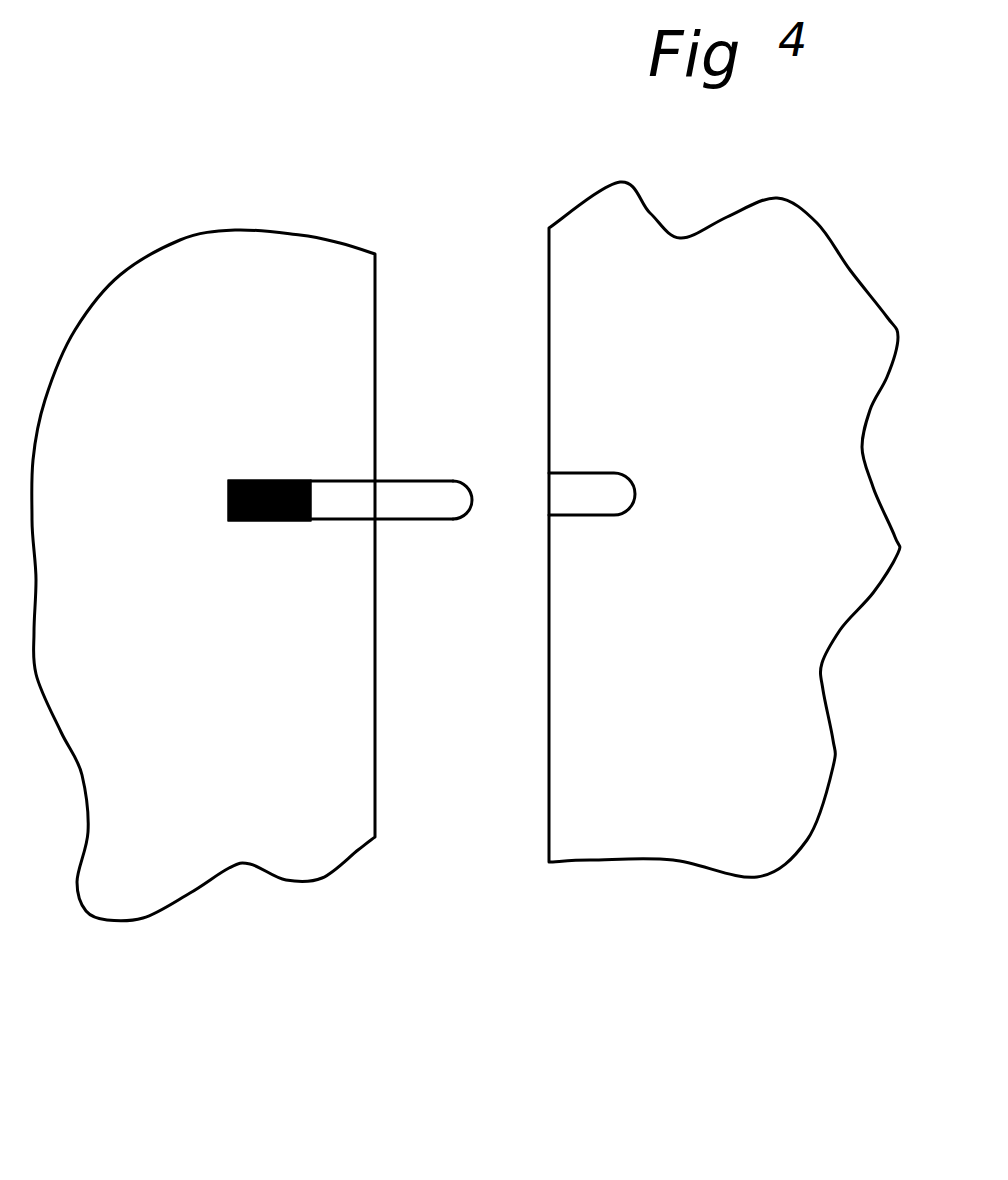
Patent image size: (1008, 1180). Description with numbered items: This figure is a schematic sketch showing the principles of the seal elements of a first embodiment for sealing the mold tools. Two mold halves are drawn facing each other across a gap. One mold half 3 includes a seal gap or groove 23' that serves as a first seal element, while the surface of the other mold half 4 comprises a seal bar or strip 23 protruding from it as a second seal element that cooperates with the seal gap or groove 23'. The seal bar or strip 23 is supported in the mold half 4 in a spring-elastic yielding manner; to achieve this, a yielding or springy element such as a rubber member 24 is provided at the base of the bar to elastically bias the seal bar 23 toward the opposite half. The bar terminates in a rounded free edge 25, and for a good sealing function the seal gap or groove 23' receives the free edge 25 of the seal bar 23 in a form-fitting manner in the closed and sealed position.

The mold half 3 is at (713, 838).
The mold half 4 is at (175, 873).
The seal bar or strip 23 is at (391, 562).
The seal gap or groove 23' is at (638, 542).
The rubber member 24 is at (263, 525).
The free edge 25 is at (472, 493).